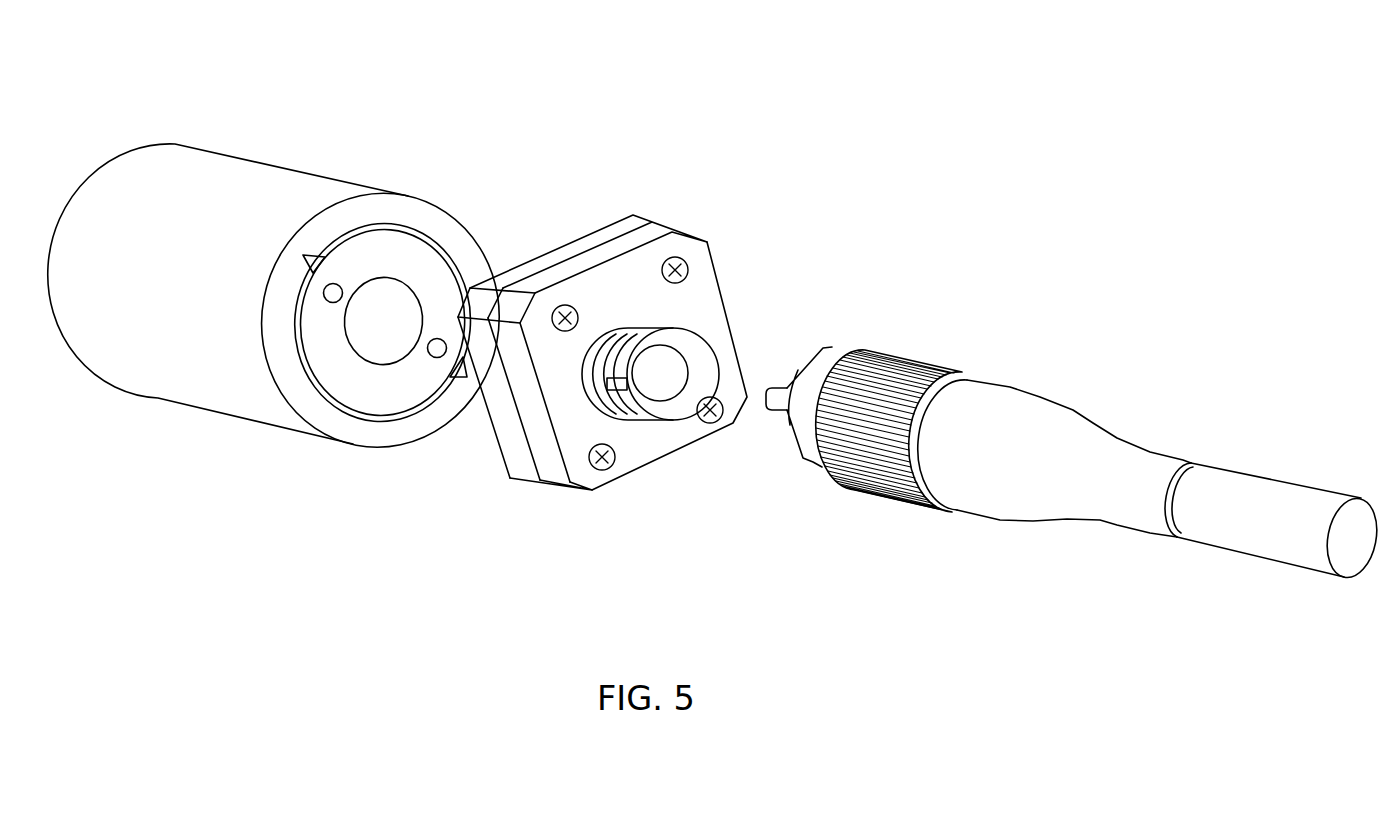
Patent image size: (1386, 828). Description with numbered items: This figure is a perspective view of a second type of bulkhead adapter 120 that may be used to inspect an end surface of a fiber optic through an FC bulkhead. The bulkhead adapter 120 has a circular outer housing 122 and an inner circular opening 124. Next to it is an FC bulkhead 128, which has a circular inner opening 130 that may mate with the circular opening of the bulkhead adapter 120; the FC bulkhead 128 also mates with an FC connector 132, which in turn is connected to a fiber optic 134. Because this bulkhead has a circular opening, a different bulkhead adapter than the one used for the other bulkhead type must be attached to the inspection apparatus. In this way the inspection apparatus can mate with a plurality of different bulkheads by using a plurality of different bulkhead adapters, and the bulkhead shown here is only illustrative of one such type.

The bulkhead adapter 120 is at (715, 317).
The circular outer housing 122 is at (284, 311).
The inner circular opening 124 is at (390, 345).
The FC bulkhead 128 is at (620, 370).
The circular inner opening 130 is at (692, 340).
The FC connector 132 is at (852, 340).
The fiber optic 134 is at (1247, 472).